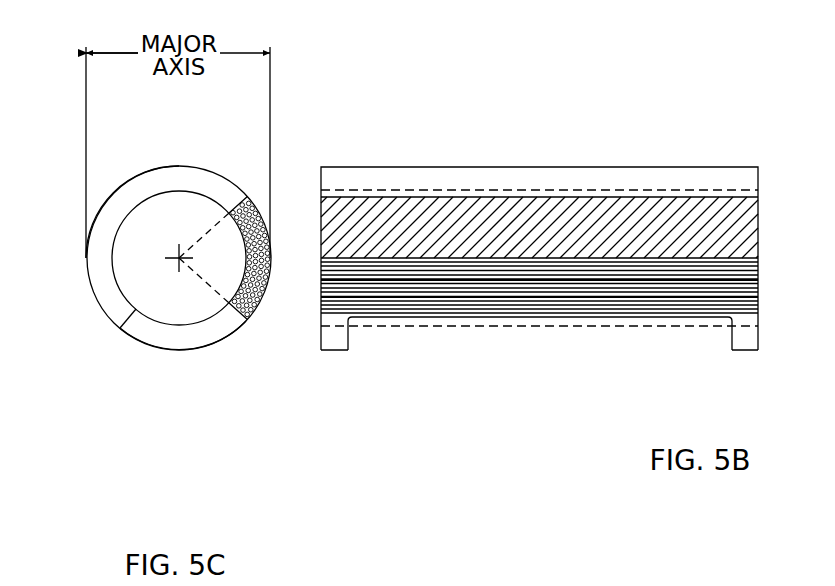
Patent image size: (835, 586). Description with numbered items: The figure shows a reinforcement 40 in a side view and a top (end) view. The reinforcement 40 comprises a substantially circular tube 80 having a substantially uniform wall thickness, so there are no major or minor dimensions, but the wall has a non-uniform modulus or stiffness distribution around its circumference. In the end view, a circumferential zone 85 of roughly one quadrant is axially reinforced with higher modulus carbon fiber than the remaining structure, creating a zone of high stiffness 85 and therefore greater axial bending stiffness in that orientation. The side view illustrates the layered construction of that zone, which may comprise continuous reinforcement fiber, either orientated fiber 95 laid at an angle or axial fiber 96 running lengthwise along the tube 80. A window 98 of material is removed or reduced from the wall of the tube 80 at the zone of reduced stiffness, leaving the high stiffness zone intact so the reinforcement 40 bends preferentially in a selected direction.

In FIG. 5C, the reinforcement 40 is at (257, 206).
In FIG. 5C, the circular tube 80 is at (162, 179).
In FIG. 5B, the circular tube 80 is at (535, 166).
In FIG. 5C, the circumferential zone of high stiffness 85 is at (237, 297).
In FIG. 5B, the orientated continuous reinforcement fiber 95 is at (615, 243).
In FIG. 5B, the axial continuous reinforcement fiber 96 is at (571, 297).
In FIG. 5C, the window 98 is at (188, 337).
In FIG. 5B, the window 98 is at (454, 347).